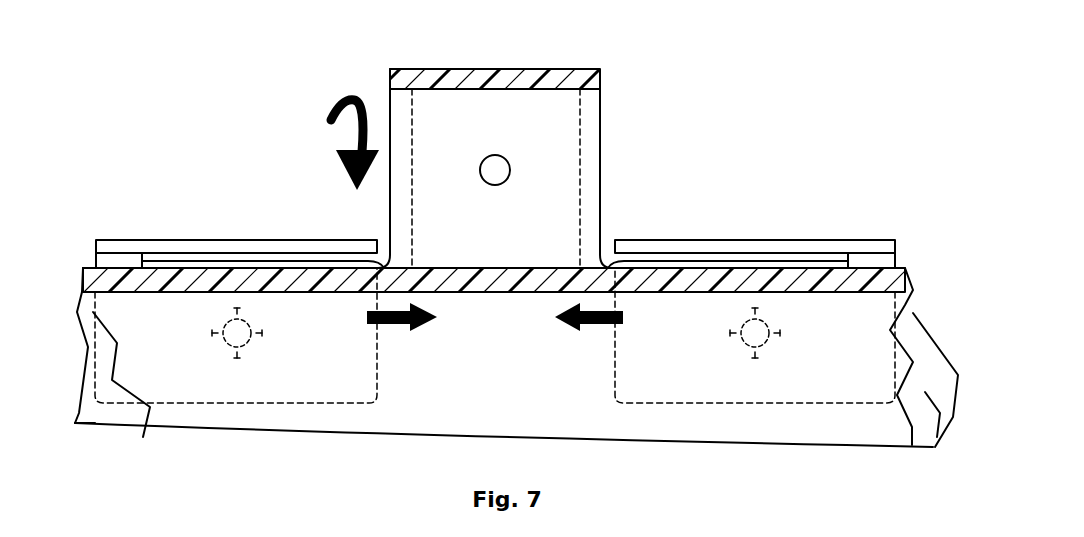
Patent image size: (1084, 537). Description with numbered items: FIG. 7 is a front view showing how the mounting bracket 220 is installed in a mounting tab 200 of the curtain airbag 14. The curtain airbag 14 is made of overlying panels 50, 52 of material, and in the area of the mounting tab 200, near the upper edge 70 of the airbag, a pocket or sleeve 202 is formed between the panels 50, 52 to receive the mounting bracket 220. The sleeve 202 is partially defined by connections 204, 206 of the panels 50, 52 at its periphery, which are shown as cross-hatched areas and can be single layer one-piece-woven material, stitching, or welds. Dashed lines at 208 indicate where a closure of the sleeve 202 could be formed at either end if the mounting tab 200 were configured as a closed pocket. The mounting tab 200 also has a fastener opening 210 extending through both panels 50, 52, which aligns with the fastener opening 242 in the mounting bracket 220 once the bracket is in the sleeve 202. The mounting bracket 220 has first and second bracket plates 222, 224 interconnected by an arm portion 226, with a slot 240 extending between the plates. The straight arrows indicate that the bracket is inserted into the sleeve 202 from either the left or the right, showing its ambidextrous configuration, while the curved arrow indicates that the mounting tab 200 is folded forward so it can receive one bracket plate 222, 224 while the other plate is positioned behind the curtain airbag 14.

The curtain airbag 14 is at (650, 402).
The panel 50 is at (590, 118).
The panel 52 is at (72, 423).
The upper edge 70 is at (93, 280).
The mounting tab 200 is at (510, 113).
The sleeve 202 is at (393, 80).
The connection 204 is at (432, 113).
The connection 206 is at (477, 278).
The closure 208 is at (580, 177).
The fastener opening 210 is at (503, 176).
The mounting bracket 220 is at (260, 190).
The first bracket plate 222 is at (203, 370).
The second bracket plate 224 is at (212, 247).
The arm portion 226 is at (118, 253).
The slot 240 is at (293, 258).
The fastener opening 242 is at (237, 333).